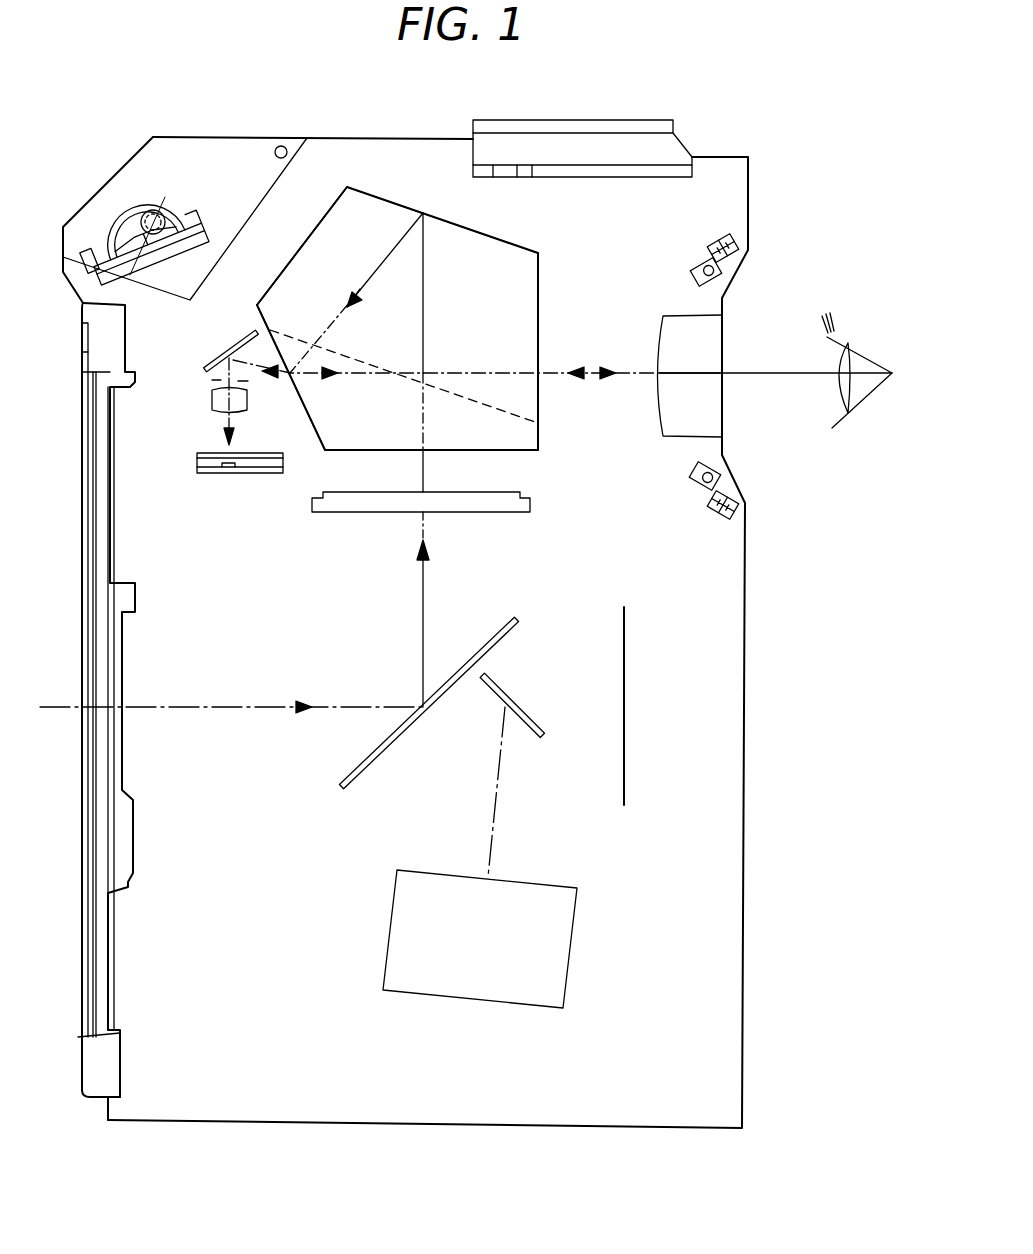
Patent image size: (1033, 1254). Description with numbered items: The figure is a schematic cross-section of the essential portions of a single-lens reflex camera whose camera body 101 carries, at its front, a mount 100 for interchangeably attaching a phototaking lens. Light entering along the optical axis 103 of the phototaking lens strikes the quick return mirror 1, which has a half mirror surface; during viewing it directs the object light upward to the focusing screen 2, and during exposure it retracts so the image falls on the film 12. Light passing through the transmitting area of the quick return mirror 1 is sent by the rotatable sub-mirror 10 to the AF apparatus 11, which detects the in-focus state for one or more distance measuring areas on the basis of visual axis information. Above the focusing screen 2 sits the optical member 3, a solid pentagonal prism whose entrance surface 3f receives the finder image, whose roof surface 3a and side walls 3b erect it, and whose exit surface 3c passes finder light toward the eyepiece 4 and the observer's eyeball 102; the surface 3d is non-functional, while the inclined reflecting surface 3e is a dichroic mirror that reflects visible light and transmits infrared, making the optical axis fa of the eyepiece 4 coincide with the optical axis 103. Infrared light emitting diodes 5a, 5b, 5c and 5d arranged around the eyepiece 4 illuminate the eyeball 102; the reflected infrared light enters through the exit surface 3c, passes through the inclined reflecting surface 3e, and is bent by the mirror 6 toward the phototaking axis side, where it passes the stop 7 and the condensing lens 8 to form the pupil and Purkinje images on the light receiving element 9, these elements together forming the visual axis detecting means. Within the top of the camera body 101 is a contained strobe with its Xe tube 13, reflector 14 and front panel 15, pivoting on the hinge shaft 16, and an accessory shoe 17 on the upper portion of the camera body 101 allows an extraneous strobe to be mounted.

The camera body 101 is at (224, 112).
The hinge shaft 16 is at (284, 145).
The accessory shoe 17 is at (581, 120).
The Xe tube 13 is at (165, 205).
The reflector 14 is at (165, 222).
The front panel 15 is at (190, 244).
The optical member 3 is at (426, 285).
The roof surface 3a is at (500, 272).
The side walls 3b is at (520, 445).
The exit surface 3c is at (540, 334).
The non-functional surface 3d is at (300, 257).
The inclined reflecting surface 3e is at (306, 420).
The entrance surface 3f is at (392, 452).
The mirror 6 is at (216, 348).
The stop 7 is at (212, 381).
The condensing lens 8 is at (212, 409).
The light receiving element 9 is at (226, 475).
The focusing screen 2 is at (492, 513).
The eyepiece 4 is at (723, 346).
The optical axis of the eyepiece fa is at (752, 378).
The light emitting diode 5a is at (742, 500).
The light emitting diode 5b is at (716, 470).
The light emitting diode 5c is at (720, 280).
The light emitting diode 5d is at (742, 240).
The eyeball 102 is at (850, 346).
The mount 100 is at (82, 472).
The optical axis of the phototaking lens 103 is at (200, 714).
The quick return mirror 1 is at (515, 630).
The sub-mirror 10 is at (542, 719).
The film 12 is at (624, 780).
The AF apparatus 11 is at (530, 888).